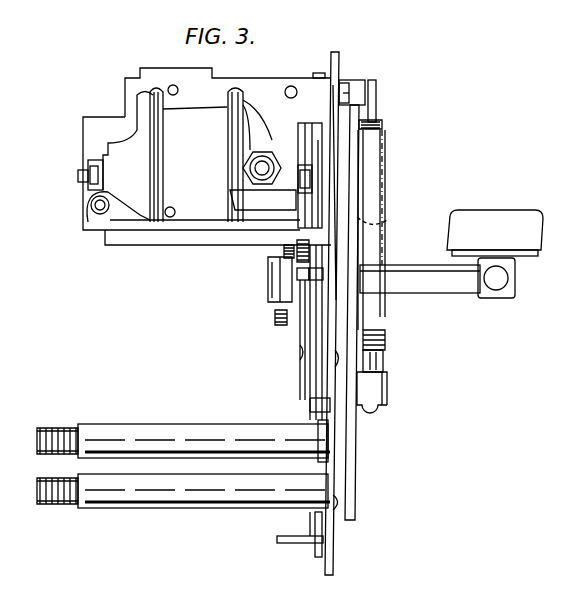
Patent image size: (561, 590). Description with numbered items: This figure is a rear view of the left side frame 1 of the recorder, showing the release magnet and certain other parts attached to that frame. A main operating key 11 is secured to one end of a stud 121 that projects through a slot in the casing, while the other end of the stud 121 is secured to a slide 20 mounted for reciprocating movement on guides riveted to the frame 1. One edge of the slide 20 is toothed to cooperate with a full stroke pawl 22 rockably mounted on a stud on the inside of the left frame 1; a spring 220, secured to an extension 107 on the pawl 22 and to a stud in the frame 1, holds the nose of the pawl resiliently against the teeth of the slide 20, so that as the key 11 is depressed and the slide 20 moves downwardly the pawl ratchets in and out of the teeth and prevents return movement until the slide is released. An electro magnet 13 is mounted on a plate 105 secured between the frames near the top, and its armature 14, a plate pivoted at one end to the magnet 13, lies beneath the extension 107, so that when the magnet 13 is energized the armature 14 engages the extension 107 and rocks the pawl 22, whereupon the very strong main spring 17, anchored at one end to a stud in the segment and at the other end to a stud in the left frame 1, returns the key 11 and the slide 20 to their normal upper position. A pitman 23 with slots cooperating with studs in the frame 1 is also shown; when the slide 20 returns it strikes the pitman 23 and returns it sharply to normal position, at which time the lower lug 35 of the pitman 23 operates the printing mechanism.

The left side frame 1 is at (340, 60).
The main spring 17 is at (367, 157).
The plate 105 is at (187, 88).
The electro magnet 13 is at (196, 160).
The armature 14 is at (173, 225).
The full stroke pawl 22 is at (298, 190).
The extension 107 is at (298, 215).
The spring 220 is at (282, 253).
The stud 121 is at (458, 290).
The main operating key 11 is at (462, 225).
The slide 20 is at (318, 405).
The pitman 23 is at (325, 430).
The lower lug 35 is at (275, 540).